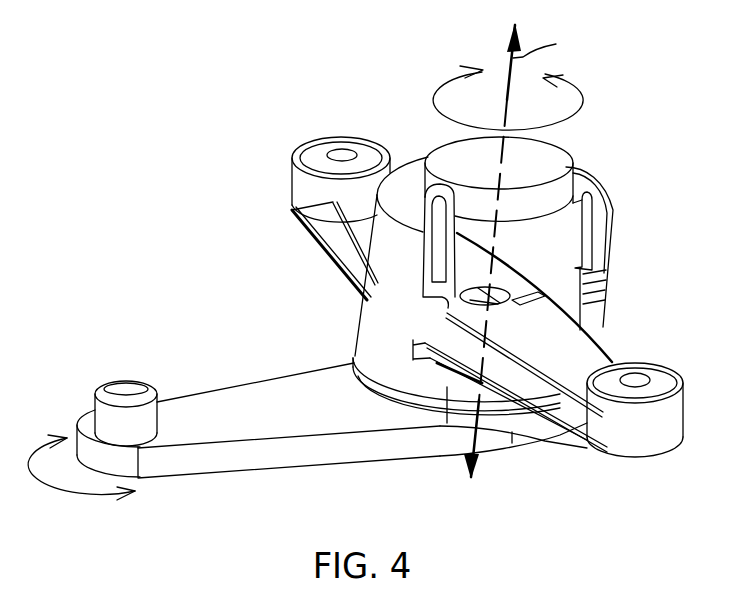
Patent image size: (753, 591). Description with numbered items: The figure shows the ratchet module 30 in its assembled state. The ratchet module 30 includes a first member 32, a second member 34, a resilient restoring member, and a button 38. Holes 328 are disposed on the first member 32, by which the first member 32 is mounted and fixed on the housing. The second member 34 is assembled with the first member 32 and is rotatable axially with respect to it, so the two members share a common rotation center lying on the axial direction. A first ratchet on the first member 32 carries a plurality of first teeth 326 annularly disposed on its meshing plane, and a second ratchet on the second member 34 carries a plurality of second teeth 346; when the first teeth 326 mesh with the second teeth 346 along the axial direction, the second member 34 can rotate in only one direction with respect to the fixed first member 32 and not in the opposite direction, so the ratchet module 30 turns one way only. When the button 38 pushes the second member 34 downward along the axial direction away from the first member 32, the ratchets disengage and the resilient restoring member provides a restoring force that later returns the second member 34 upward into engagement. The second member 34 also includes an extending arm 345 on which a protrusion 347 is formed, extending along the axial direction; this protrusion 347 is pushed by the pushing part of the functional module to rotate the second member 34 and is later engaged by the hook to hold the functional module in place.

The ratchet module 30 is at (236, 92).
The first member 32 is at (560, 307).
The holes 328 is at (340, 152).
The button 38 is at (543, 167).
The first teeth 326 is at (468, 385).
The second member 34 is at (268, 487).
The extending arm 345 is at (232, 405).
The second teeth 346 is at (450, 425).
The protrusion 347 is at (125, 390).